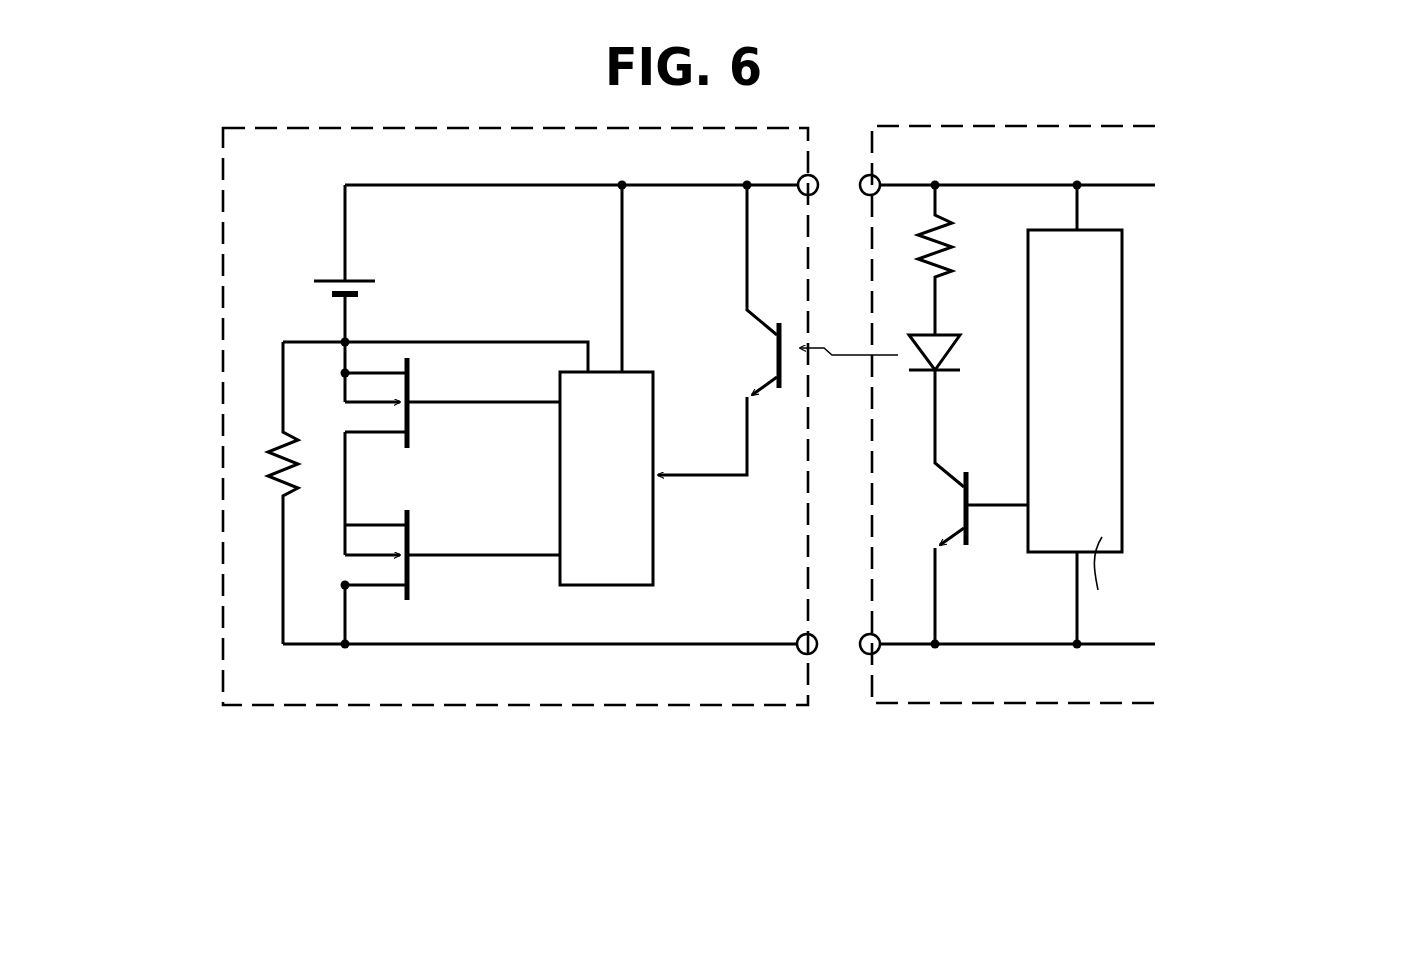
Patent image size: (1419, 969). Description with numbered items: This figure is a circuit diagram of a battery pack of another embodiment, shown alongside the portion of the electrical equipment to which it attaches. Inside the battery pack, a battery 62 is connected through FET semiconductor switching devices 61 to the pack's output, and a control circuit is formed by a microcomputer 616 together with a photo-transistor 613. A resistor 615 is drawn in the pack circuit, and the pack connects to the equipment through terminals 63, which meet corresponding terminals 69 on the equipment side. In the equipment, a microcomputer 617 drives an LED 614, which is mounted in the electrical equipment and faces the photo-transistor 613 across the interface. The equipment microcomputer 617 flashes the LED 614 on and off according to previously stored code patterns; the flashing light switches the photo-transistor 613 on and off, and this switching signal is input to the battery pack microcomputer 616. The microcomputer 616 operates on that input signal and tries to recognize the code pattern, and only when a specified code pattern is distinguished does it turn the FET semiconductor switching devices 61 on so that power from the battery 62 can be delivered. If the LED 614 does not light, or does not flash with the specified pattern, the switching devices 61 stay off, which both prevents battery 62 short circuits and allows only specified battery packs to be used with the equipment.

The FET semiconductor switching devices 61 is at (323, 507).
The battery 62 is at (362, 278).
The terminals 63 is at (799, 178).
The terminals 69 is at (878, 182).
The photo-transistor 613 is at (748, 355).
The LED 614 is at (941, 340).
The resistor 615 is at (268, 453).
The microcomputer 616 is at (640, 568).
The microcomputer 617 is at (1105, 497).